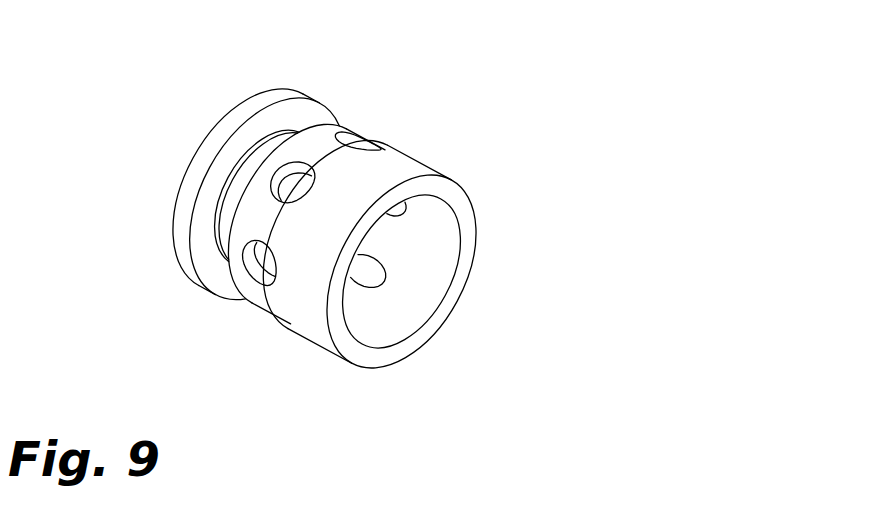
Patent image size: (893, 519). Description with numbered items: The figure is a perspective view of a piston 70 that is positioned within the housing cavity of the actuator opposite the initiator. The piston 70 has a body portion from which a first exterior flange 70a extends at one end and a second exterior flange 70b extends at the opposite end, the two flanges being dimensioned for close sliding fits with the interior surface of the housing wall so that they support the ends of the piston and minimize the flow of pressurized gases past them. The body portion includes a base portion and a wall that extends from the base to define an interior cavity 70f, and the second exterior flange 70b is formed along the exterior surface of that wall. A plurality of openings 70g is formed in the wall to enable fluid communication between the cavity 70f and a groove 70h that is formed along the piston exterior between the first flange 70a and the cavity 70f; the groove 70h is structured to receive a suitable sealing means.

The piston 70 is at (133, 237).
The first exterior flange 70a is at (223, 133).
The second exterior flange 70b is at (402, 172).
The interior cavity 70f is at (400, 264).
The opening 70g is at (298, 181).
The groove 70h is at (237, 182).